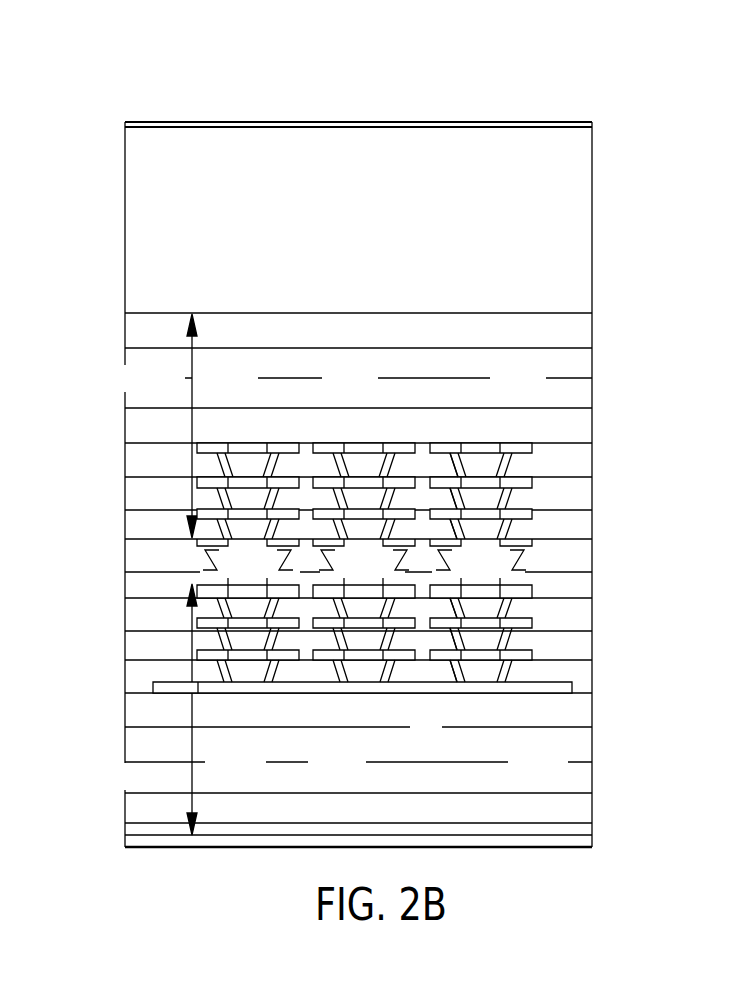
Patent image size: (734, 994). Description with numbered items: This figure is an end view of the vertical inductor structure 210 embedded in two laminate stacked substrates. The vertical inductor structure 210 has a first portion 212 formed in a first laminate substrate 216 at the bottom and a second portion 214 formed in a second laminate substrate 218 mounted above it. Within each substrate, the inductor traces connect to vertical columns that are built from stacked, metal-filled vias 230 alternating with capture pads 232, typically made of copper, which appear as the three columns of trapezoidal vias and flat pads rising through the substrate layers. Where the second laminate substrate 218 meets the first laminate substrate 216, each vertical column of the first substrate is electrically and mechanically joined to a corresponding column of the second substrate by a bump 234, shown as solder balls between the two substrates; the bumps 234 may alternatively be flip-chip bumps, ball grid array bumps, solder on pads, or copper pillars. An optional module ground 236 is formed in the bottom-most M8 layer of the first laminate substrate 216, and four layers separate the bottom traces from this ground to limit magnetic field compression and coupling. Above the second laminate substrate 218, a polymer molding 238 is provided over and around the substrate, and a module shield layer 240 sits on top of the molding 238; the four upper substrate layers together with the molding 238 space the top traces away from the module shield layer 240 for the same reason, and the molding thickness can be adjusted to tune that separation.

The vertical inductor structure 210 is at (575, 108).
The module shield layer 240 is at (254, 122).
The molding 238 is at (572, 236).
The second laminate substrate 218 is at (578, 333).
The second portion 214 is at (634, 394).
The first portion 212 is at (634, 736).
The first laminate substrate 216 is at (572, 783).
The module ground 236 is at (472, 828).
The metal-filled vias 230 is at (464, 538).
The capture pads 232 is at (533, 544).
The bump 234 is at (203, 561).